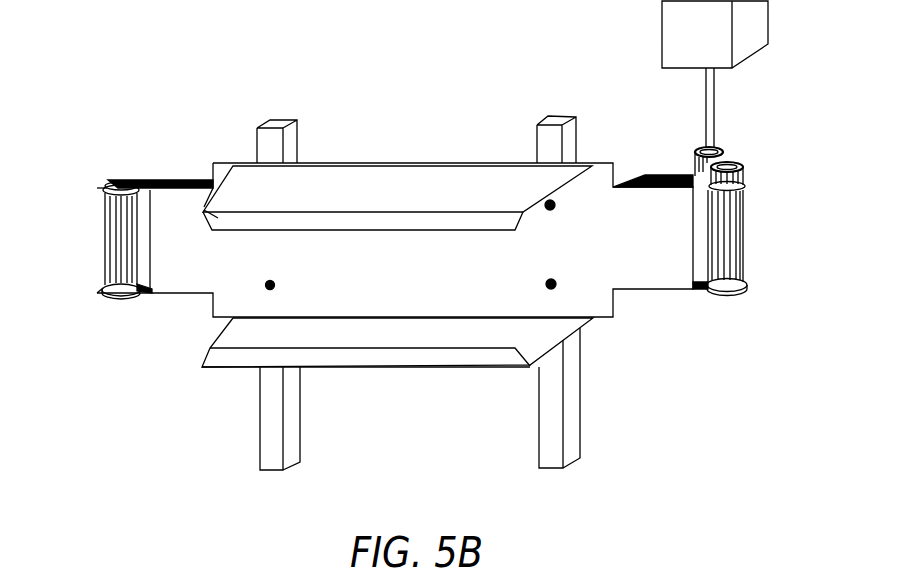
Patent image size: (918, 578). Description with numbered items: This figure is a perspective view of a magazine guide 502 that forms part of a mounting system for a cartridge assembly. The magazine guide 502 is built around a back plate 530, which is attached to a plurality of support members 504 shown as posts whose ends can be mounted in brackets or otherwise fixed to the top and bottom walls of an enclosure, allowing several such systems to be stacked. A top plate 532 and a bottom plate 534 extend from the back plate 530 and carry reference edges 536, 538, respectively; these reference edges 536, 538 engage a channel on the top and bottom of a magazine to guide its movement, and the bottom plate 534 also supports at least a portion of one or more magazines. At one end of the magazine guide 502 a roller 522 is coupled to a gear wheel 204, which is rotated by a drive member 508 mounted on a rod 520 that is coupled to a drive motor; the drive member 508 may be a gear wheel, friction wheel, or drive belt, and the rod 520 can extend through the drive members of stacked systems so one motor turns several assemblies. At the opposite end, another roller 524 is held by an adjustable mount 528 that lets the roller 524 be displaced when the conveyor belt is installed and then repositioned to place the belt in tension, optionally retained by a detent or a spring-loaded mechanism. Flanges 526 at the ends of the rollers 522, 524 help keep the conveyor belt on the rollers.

The magazine guide 502 is at (190, 90).
The support member 504 is at (287, 120).
The drive member 508 is at (722, 147).
The rod 520 is at (715, 97).
The gear wheel 204 is at (747, 170).
The roller 522 is at (766, 256).
The roller 524 is at (83, 217).
The flange 526 is at (745, 290).
The adjustable mount 528 is at (113, 181).
The back plate 530 is at (628, 278).
The top plate 532 is at (388, 172).
The bottom plate 534 is at (368, 366).
The reference edge 536 is at (195, 180).
The reference edge 538 is at (425, 357).